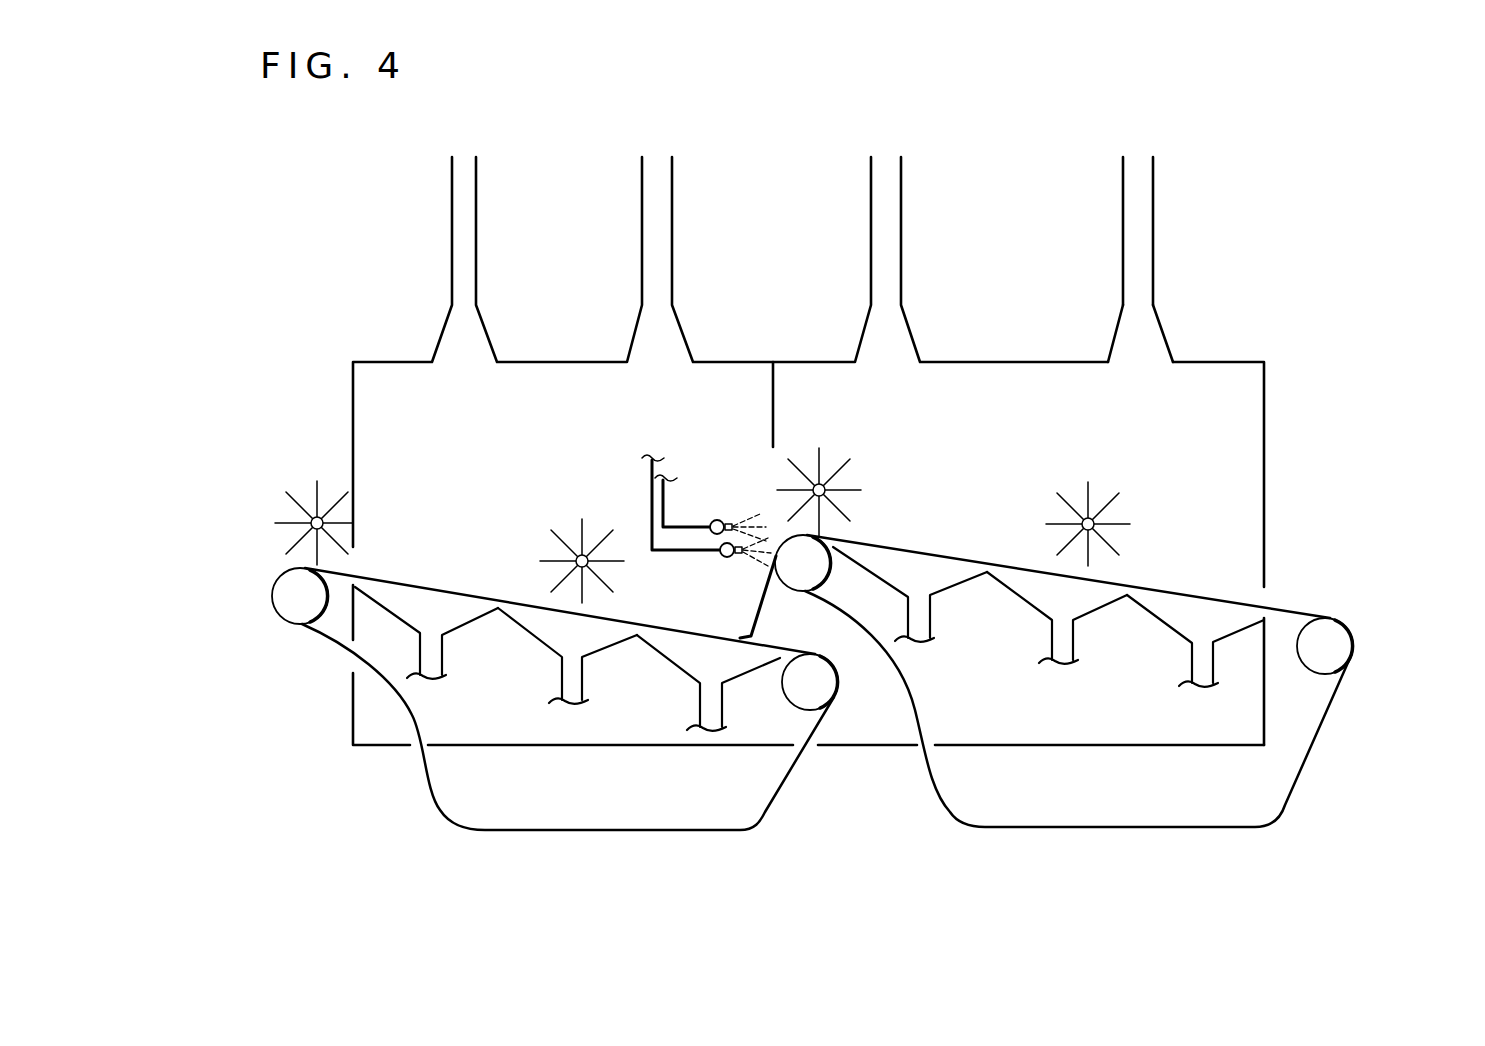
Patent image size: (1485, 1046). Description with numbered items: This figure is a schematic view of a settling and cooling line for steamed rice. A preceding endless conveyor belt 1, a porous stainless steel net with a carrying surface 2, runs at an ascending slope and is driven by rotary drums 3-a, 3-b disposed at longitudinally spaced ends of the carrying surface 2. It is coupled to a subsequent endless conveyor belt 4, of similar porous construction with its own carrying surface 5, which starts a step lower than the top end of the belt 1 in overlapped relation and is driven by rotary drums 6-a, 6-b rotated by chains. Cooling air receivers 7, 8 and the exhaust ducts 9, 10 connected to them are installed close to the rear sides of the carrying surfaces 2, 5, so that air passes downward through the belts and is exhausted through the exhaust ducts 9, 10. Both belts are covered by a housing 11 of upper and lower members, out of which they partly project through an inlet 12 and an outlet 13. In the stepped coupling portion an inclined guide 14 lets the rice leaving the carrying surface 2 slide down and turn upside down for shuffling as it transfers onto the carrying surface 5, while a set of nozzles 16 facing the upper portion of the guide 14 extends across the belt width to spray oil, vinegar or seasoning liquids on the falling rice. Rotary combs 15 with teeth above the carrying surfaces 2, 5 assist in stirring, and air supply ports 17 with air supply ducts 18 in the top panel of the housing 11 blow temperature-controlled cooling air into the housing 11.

The endless conveyor belt 1 is at (1340, 623).
The carrying surface 2 is at (1220, 597).
The rotary drum 3-a is at (1327, 653).
The rotary drum 3-b is at (800, 552).
The subsequent endless conveyor belt 4 is at (280, 580).
The carrying surface 5 is at (448, 588).
The rotary drum 6-a is at (817, 687).
The rotary drum 6-b is at (293, 603).
The cooling air receiver 7 is at (1142, 608).
The cooling air receiver 8 is at (667, 660).
The exhaust duct 9 is at (1047, 627).
The exhaust duct 10 is at (560, 672).
The housing 11 is at (1263, 410).
The inlet 12 is at (1283, 590).
The outlet 13 is at (353, 563).
The inclined guide 14 is at (760, 593).
The rotary comb 15 is at (278, 522).
The set of nozzles 16 is at (730, 522).
The air supply port 17 is at (1138, 316).
The air supply duct 18 is at (1155, 205).